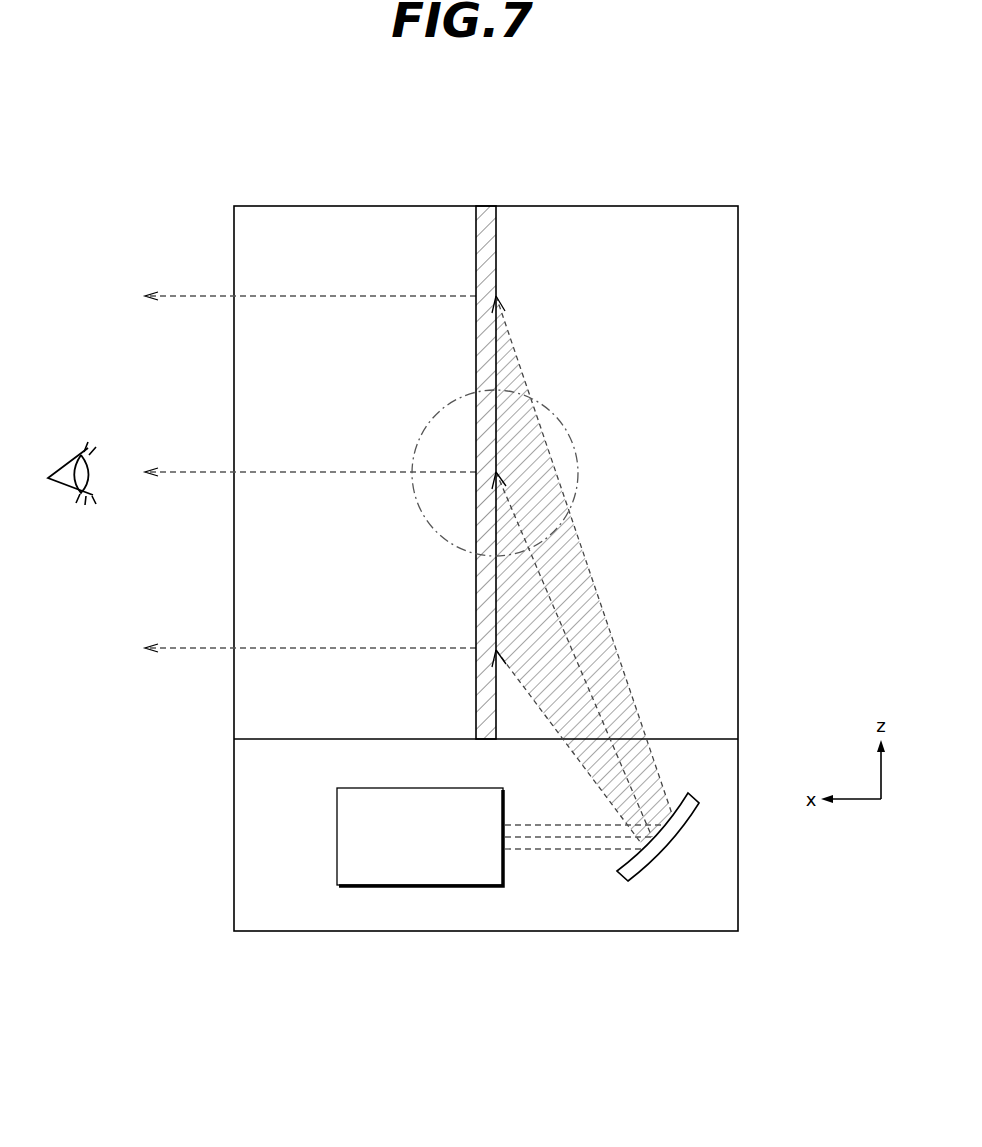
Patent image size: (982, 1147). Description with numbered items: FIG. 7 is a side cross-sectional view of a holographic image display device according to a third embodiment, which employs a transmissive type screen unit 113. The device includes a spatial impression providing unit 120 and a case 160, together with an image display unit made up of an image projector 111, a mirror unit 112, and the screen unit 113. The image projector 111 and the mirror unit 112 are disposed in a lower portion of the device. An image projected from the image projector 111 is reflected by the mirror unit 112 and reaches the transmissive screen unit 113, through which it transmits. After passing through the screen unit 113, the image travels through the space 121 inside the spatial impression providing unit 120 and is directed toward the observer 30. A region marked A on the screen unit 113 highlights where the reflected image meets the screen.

The spatial impression providing unit 120 is at (387, 198).
The space 121 is at (250, 666).
The screen unit 113 is at (497, 252).
The case 160 is at (663, 452).
The image projector 111 is at (447, 887).
The mirror unit 112 is at (680, 838).
The observer 30 is at (48, 481).
The region A is at (563, 418).